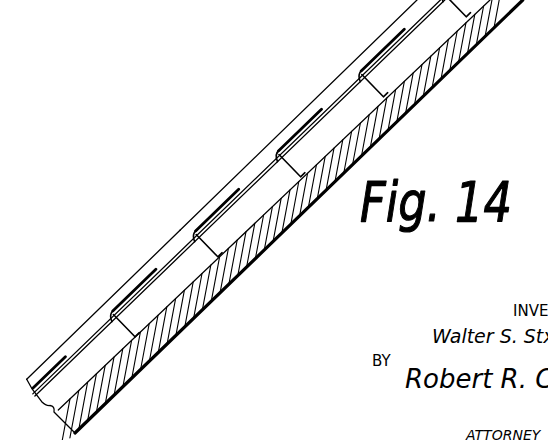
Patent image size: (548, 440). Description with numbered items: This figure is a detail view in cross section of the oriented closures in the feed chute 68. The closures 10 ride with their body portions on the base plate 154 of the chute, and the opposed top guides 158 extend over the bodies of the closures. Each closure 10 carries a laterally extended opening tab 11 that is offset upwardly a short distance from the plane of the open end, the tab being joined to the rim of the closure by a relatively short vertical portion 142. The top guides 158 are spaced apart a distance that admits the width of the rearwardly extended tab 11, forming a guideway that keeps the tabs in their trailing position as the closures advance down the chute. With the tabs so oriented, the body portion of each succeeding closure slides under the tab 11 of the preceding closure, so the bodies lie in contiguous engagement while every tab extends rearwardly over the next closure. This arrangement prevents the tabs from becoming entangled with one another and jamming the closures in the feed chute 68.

The closure 10 is at (87, 340).
The opening tab 11 is at (128, 294).
The feed chute 68 is at (240, 166).
The vertical portion of the tab 142 is at (281, 152).
The base plate 154 is at (198, 313).
The top guides 158 is at (165, 240).